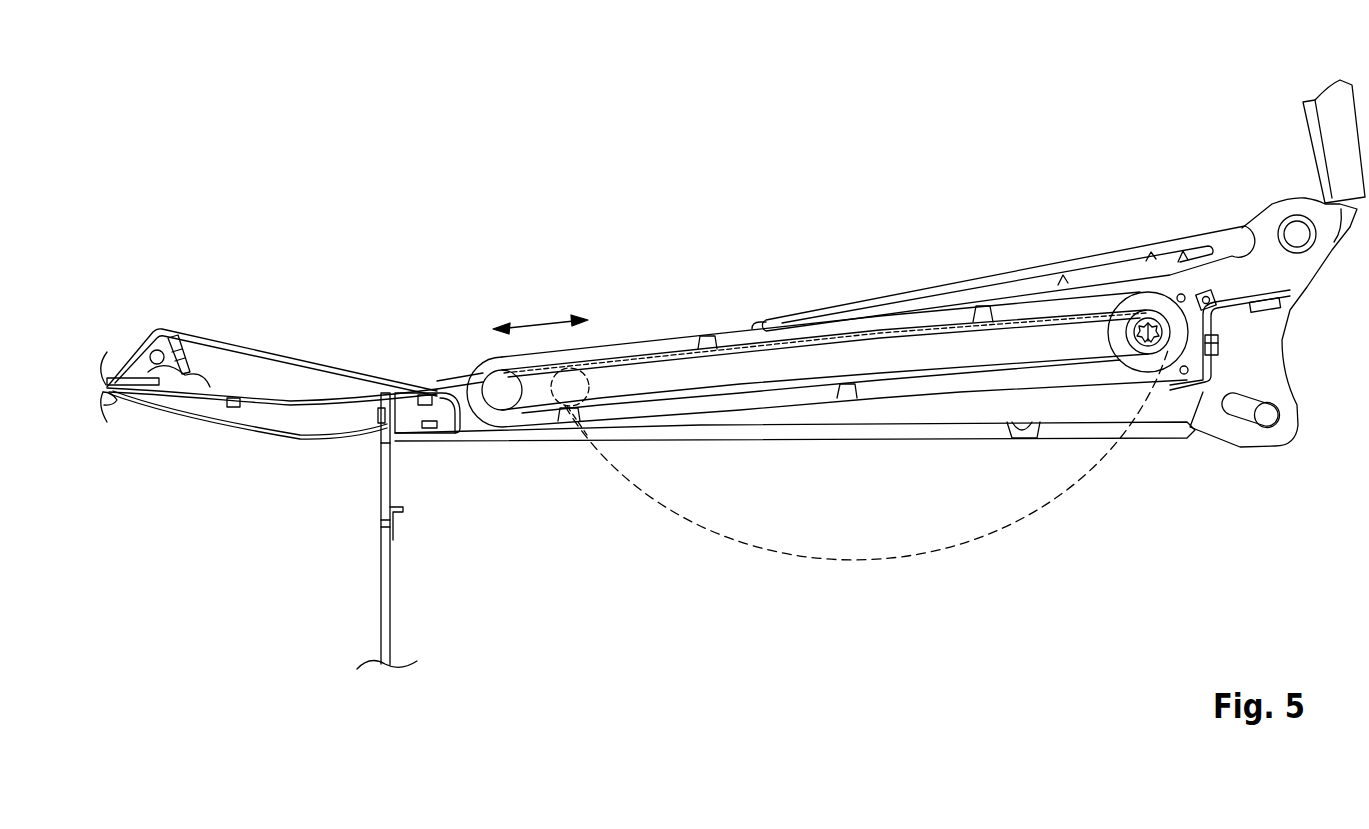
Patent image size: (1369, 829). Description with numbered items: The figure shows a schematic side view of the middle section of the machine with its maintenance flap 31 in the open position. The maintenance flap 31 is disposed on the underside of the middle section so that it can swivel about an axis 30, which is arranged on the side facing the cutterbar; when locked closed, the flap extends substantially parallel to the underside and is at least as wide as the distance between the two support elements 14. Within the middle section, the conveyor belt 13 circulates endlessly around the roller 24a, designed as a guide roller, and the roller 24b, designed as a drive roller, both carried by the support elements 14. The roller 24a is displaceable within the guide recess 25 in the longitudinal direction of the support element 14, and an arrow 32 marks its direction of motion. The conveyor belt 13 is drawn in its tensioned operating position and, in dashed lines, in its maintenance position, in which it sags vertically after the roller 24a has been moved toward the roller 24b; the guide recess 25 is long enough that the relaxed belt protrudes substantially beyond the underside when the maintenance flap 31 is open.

The conveyor belt 13 is at (687, 338).
The support element 14 is at (1232, 266).
The guide roller 24a is at (503, 388).
The drive roller 24b is at (1136, 312).
The guide recess 25 is at (539, 399).
The axis 30 is at (395, 442).
The maintenance flap 31 is at (378, 581).
The arrow 32 is at (538, 322).